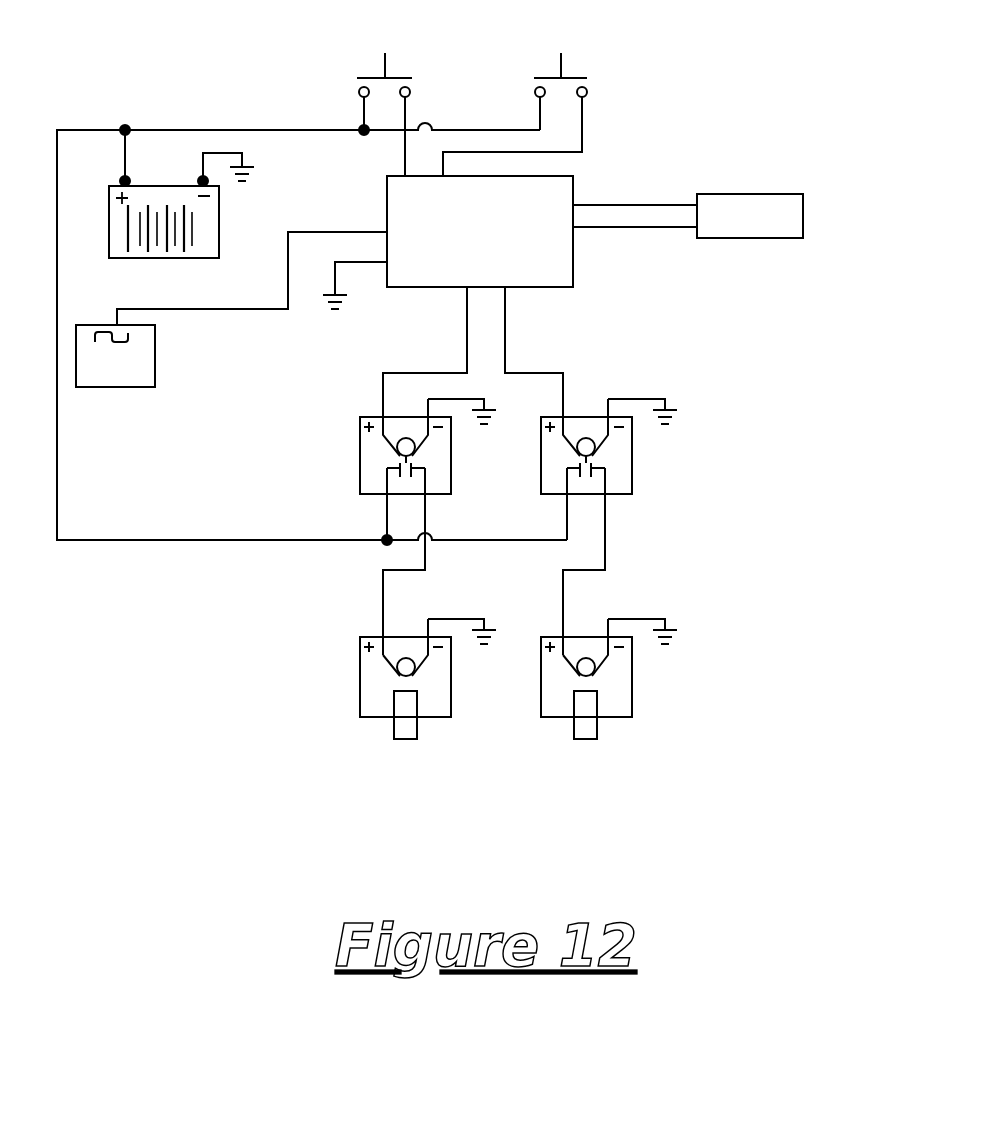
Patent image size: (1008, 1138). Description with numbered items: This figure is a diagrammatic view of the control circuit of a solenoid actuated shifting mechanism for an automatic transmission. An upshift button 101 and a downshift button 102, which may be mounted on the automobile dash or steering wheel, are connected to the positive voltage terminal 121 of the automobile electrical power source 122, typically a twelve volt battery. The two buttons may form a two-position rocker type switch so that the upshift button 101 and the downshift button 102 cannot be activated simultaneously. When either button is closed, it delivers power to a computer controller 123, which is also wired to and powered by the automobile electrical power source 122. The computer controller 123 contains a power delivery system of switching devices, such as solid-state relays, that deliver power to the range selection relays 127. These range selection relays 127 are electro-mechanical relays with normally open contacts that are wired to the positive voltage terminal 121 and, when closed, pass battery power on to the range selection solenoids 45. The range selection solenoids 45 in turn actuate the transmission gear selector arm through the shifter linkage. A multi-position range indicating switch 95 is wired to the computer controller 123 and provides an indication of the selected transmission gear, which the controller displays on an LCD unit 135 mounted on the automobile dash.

The upshift button 101 is at (368, 77).
The downshift button 102 is at (545, 77).
The positive voltage terminal 121 is at (130, 178).
The automobile electrical power source 122 is at (220, 223).
The computer controller 123 is at (575, 187).
The LCD unit 135 is at (803, 202).
The multi-position range indicating switch 95 is at (116, 387).
The range selection relays 127 is at (360, 458).
The range selection solenoids 45 is at (362, 717).